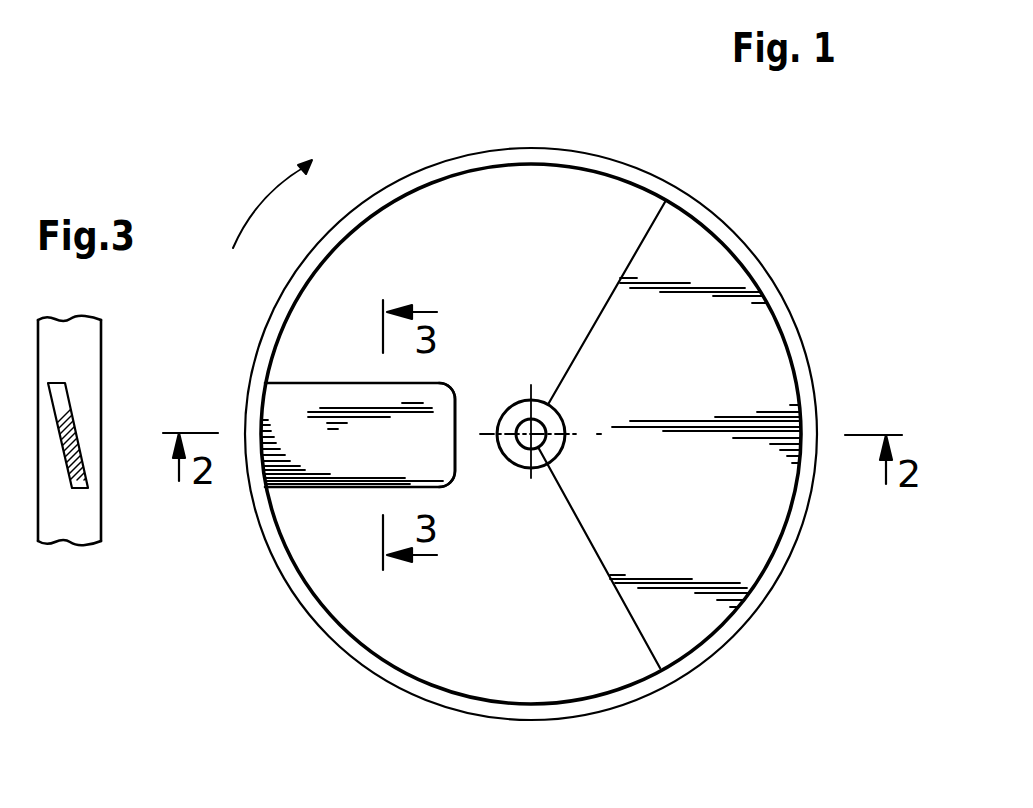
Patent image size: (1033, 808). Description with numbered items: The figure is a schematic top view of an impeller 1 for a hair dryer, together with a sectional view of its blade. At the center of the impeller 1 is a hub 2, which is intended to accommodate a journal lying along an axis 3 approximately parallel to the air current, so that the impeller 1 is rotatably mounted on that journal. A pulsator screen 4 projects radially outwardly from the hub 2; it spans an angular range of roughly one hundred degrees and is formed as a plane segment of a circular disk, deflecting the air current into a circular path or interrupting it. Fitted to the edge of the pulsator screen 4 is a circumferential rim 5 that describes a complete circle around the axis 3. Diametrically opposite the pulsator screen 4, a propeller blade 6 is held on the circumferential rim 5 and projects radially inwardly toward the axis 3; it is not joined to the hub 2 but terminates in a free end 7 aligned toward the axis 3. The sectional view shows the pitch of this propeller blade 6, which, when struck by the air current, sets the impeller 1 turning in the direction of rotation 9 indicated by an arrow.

In FIG. 1, the impeller 1 is at (633, 151).
In FIG. 1, the hub 2 is at (558, 425).
In FIG. 1, the axis 3 is at (535, 442).
In FIG. 1, the pulsator screen 4 is at (730, 268).
In FIG. 1, the circumferential rim 5 is at (298, 598).
In FIG. 3, the circumferential rim 5 is at (55, 530).
In FIG. 1, the propeller blade 6 is at (305, 470).
In FIG. 3, the propeller blade 6 is at (68, 420).
In FIG. 1, the free end 7 is at (438, 476).
In FIG. 1, the direction of rotation 9 is at (260, 212).